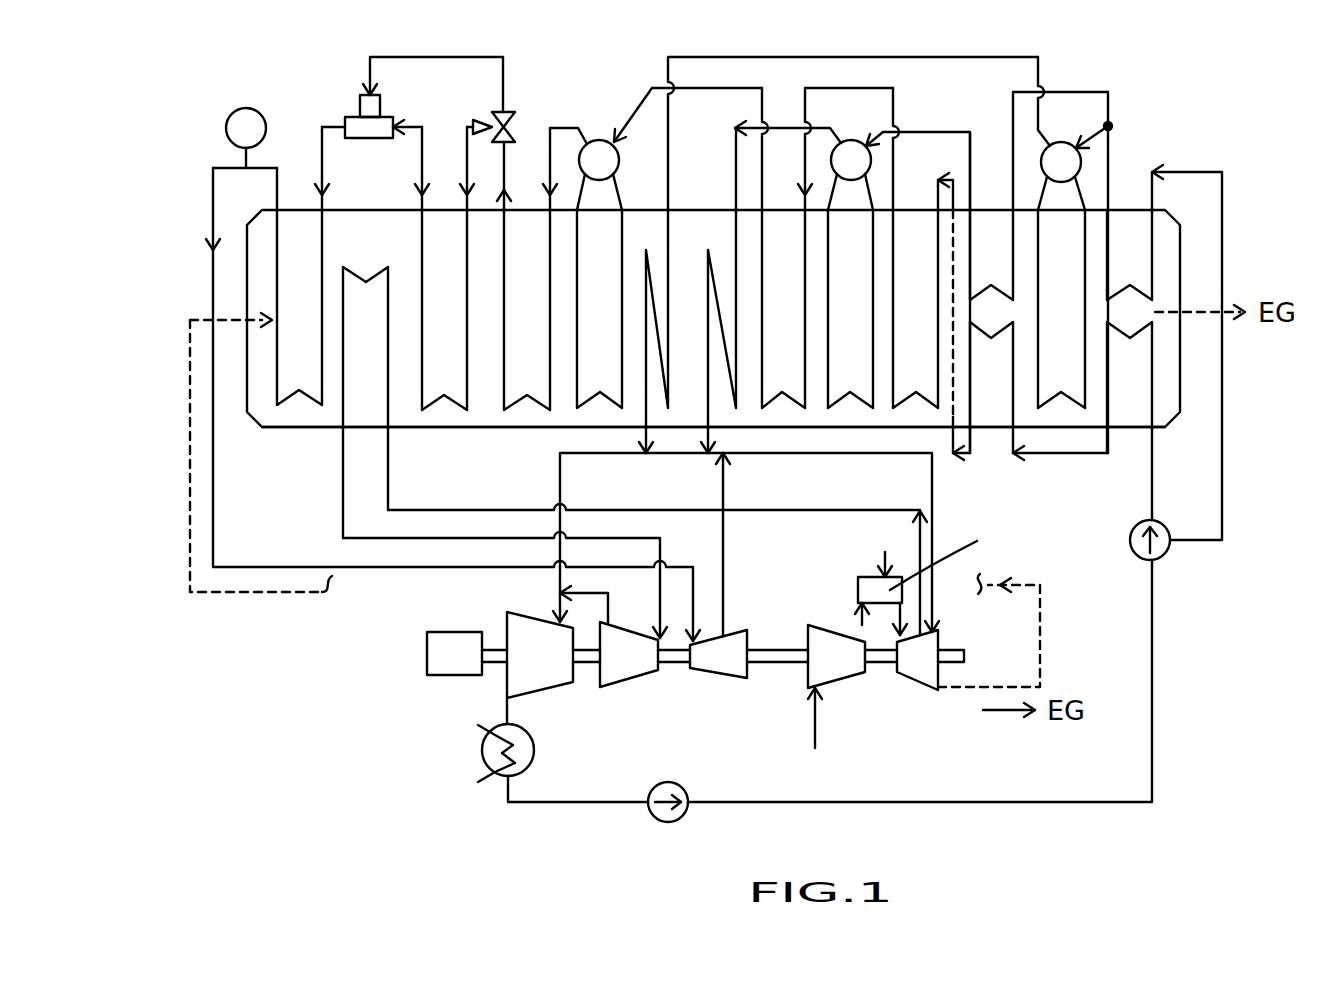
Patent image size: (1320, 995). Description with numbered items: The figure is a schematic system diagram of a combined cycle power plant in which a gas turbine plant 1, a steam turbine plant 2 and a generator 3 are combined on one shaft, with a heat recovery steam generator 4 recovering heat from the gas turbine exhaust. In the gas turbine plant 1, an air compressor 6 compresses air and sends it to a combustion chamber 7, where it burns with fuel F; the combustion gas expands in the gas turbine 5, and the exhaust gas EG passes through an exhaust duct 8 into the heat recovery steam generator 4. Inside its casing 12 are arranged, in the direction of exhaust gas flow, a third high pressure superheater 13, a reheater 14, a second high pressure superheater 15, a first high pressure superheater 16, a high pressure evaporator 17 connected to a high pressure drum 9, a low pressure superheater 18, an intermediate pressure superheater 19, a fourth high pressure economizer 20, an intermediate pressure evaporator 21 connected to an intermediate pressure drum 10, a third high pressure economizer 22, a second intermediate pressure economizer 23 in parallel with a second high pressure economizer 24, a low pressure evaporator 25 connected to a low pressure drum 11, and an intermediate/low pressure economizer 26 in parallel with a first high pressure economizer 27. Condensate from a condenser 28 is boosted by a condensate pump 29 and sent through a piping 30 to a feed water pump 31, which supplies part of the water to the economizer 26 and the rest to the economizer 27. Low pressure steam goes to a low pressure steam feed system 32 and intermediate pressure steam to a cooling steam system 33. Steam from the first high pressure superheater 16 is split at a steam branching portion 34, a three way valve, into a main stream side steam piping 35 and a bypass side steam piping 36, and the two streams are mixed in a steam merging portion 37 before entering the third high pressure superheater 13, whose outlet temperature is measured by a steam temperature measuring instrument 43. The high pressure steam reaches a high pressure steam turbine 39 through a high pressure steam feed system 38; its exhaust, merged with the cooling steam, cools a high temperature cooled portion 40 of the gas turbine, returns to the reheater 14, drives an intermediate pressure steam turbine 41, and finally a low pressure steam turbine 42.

The gas turbine plant 1 is at (937, 624).
The steam turbine plant 2 is at (627, 688).
The generator 3 is at (427, 650).
The heat recovery steam generator 4 is at (277, 440).
The gas turbine 5 is at (925, 690).
The air compressor 6 is at (846, 688).
The combustion chamber 7 is at (858, 592).
The exhaust duct 8 is at (1040, 620).
The high pressure drum 9 is at (597, 140).
The intermediate pressure drum 10 is at (870, 136).
The low pressure drum 11 is at (1087, 158).
The casing 12 is at (315, 430).
The third high pressure superheater 13 is at (296, 387).
The reheater 14 is at (363, 286).
The second high pressure superheater 15 is at (441, 387).
The first high pressure superheater 16 is at (526, 387).
The high pressure evaporator 17 is at (598, 387).
The low pressure superheater 18 is at (656, 266).
The intermediate pressure superheater 19 is at (717, 266).
The fourth high pressure economizer 20 is at (780, 387).
The intermediate pressure evaporator 21 is at (848, 387).
The third high pressure economizer 22 is at (914, 387).
The second intermediate pressure economizer 23 is at (989, 284).
The second high pressure economizer 24 is at (989, 342).
The low pressure evaporator 25 is at (1060, 387).
The intermediate/low pressure economizer 26 is at (1128, 284).
The first high pressure economizer 27 is at (1128, 340).
The condenser 28 is at (534, 760).
The condensate pump 29 is at (690, 790).
The piping 30 is at (1011, 801).
The feed water pump 31 is at (1165, 560).
The low pressure steam feed system 32 is at (560, 473).
The cooling steam system 33 is at (807, 455).
The steam branching portion 34 is at (514, 102).
The main stream side steam piping 35 is at (423, 153).
The bypass side steam piping 36 is at (447, 56).
The steam merging portion 37 is at (356, 114).
The high pressure steam feed system 38 is at (213, 473).
The high pressure steam turbine 39 is at (727, 682).
The high temperature cooled portion 40 is at (940, 630).
The intermediate pressure steam turbine 41 is at (633, 690).
The low pressure steam turbine 42 is at (565, 688).
The steam temperature measuring instrument 43 is at (265, 120).